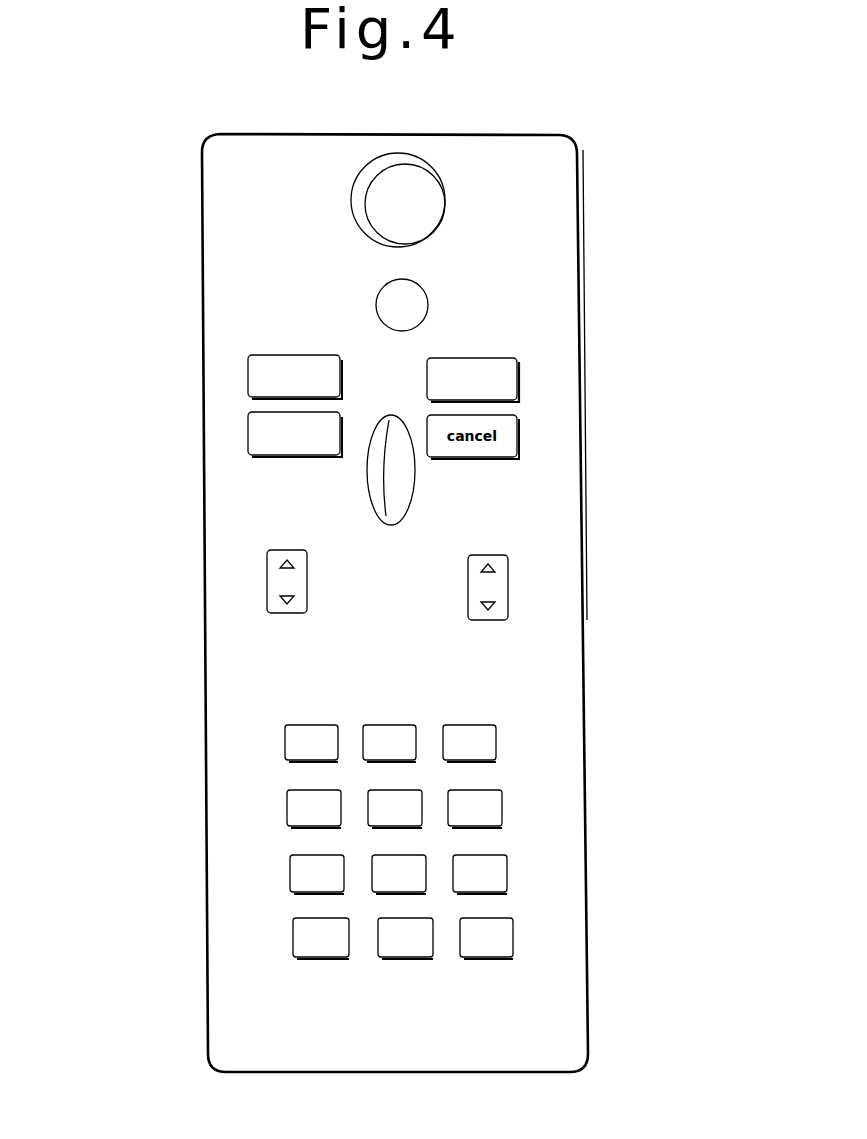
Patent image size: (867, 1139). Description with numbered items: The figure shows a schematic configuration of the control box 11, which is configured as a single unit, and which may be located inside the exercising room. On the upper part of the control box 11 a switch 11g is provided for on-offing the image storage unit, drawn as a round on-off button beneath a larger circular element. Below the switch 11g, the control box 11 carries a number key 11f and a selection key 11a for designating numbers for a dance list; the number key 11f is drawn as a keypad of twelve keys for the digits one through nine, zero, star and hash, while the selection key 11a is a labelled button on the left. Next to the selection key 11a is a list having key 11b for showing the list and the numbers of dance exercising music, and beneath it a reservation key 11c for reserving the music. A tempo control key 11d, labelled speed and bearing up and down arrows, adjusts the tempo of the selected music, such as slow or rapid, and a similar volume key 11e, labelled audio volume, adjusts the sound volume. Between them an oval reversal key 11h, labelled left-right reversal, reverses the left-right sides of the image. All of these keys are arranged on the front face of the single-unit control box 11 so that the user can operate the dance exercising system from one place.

The control box 11 is at (592, 1020).
The selection key 11a is at (253, 372).
The list having key 11b is at (520, 365).
The reservation key 11c is at (253, 438).
The tempo control key 11d is at (272, 585).
The volume key 11e is at (508, 590).
The number key 11f is at (493, 753).
The switch 11g is at (410, 303).
The reversal key 11h is at (393, 490).